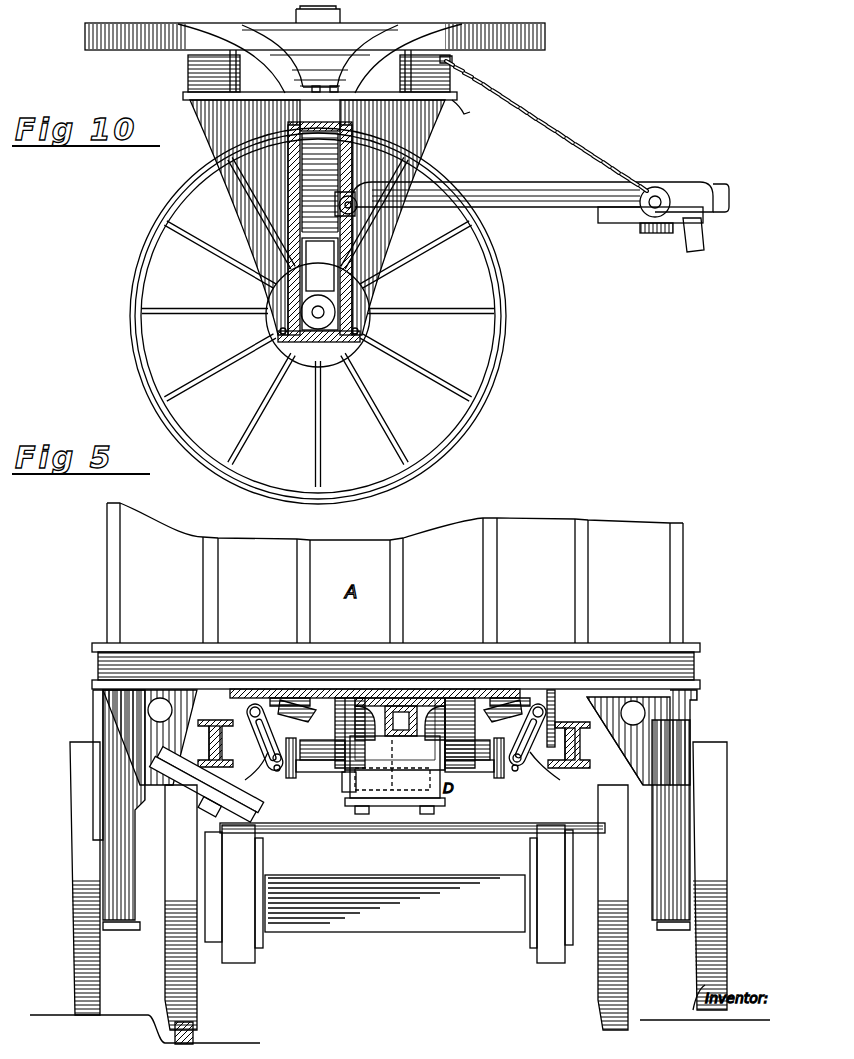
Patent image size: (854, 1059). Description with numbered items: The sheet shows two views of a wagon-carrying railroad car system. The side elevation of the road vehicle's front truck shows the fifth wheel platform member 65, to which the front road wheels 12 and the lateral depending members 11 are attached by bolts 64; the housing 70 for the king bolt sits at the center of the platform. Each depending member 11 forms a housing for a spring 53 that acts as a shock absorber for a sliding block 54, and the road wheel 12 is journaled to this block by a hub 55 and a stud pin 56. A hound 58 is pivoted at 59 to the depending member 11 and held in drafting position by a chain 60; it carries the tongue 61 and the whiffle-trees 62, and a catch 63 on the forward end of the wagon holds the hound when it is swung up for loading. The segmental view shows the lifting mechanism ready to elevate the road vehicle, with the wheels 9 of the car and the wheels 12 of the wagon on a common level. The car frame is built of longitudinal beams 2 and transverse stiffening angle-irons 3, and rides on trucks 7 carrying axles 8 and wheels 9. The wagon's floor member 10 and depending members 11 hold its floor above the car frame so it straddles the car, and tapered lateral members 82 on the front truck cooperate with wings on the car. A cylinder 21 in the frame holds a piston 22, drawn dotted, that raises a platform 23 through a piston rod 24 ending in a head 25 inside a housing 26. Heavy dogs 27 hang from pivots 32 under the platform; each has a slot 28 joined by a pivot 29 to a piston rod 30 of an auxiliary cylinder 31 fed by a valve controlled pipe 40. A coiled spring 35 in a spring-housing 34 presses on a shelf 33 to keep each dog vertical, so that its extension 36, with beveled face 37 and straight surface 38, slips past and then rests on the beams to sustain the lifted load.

In FIG. 5, the longitudinal beams 2 is at (628, 748).
In FIG. 5, the transverse stiffening angle-irons 3 is at (389, 734).
In FIG. 5, the trucks 7 is at (412, 877).
In FIG. 5, the axles 8 is at (208, 897).
In FIG. 5, the wheels 9 is at (180, 965).
In FIG. 5, the floor or body supporting member 10 is at (440, 652).
In FIG. 10, the lateral depending members 11 is at (418, 150).
In FIG. 5, the lateral depending members 11 is at (108, 796).
In FIG. 10, the road wheels 12 is at (490, 289).
In FIG. 5, the road wheels 12 is at (78, 932).
In FIG. 5, the cylinder 21 is at (392, 770).
In FIG. 5, the piston 22 is at (350, 792).
In FIG. 5, the platform 23 is at (355, 698).
In FIG. 5, the piston rod 24 is at (430, 689).
In FIG. 5, the head 25 is at (462, 698).
In FIG. 5, the housing 26 is at (390, 735).
In FIG. 5, the dogs 27 is at (405, 770).
In FIG. 5, the slot 28 is at (277, 772).
In FIG. 5, the pivot 29 is at (395, 750).
In FIG. 5, the piston rod 30 is at (290, 778).
In FIG. 5, the cylinder 31 is at (395, 766).
In FIG. 5, the pivot 32 is at (250, 709).
In FIG. 5, the spring supporting shelf 33 is at (409, 723).
In FIG. 5, the spring-housing 34 is at (298, 700).
In FIG. 5, the coiled spring 35 is at (282, 698).
In FIG. 5, the extension 36 is at (568, 714).
In FIG. 5, the beveled faces 37 is at (240, 722).
In FIG. 5, the straight surfaces 38 is at (195, 780).
In FIG. 5, the valve controlled pipe 40 is at (445, 845).
In FIG. 10, the springs 53 is at (300, 203).
In FIG. 10, the sliding blocks 54 is at (320, 284).
In FIG. 10, the hubs 55 is at (302, 296).
In FIG. 10, the stud pins 56 is at (318, 306).
In FIG. 10, the hounds 58 is at (500, 182).
In FIG. 10, the pivot 59 is at (355, 212).
In FIG. 10, the chains 60 is at (566, 143).
In FIG. 10, the tongue 61 is at (728, 197).
In FIG. 10, the whiffle-trees 62 is at (648, 233).
In FIG. 10, the catches 63 is at (469, 103).
In FIG. 10, the bolts 64 is at (296, 86).
In FIG. 10, the fifth wheel platform member 65 is at (180, 60).
In FIG. 10, the housing for the king bolt 70 is at (336, 25).
In FIG. 5, the lateral members 82 is at (135, 740).